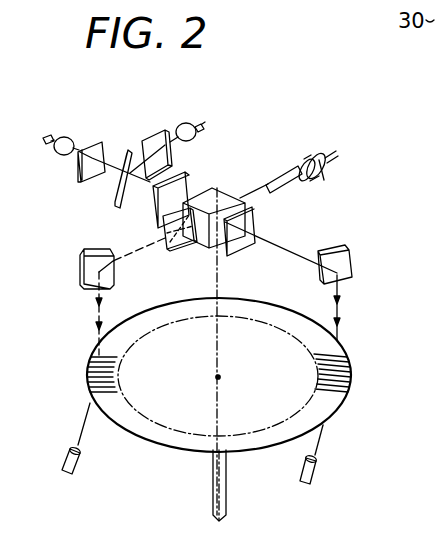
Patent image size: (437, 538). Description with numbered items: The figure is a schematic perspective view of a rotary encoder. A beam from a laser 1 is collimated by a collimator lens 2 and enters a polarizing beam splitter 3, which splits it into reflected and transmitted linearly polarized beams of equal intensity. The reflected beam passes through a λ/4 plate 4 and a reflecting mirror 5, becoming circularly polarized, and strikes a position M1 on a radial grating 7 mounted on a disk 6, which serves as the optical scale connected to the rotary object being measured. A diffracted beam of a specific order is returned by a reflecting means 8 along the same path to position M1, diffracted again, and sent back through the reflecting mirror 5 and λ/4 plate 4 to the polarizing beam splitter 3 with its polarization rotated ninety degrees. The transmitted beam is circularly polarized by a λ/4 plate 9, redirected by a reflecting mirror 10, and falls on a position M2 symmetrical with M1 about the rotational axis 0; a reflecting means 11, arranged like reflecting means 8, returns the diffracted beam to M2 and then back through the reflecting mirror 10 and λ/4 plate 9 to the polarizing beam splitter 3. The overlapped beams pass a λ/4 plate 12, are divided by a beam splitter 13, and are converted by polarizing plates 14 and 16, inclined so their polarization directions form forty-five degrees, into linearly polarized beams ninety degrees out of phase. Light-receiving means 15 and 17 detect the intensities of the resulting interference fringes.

The laser 1 is at (320, 186).
The collimator lens 2 is at (276, 170).
The polarizing beam splitter 3 is at (218, 188).
The λ/4 plate 4 is at (242, 248).
The reflecting mirror 5 is at (352, 256).
The disk 6 is at (298, 347).
The radial grating 7 is at (336, 406).
The reflecting means 8 is at (319, 466).
The λ/4 plate 9 is at (184, 248).
The reflecting mirror 10 is at (78, 272).
The reflecting means 11 is at (83, 464).
The λ/4 plate 12 is at (153, 223).
The beam splitter 13 is at (127, 148).
The polarizing plate 14 is at (95, 144).
The light-receiving means 15 is at (61, 138).
The polarizing plate 16 is at (160, 134).
The light-receiving means 17 is at (198, 133).
The rotational axis 0 is at (221, 377).
The position M1 is at (349, 358).
The position M2 is at (80, 367).